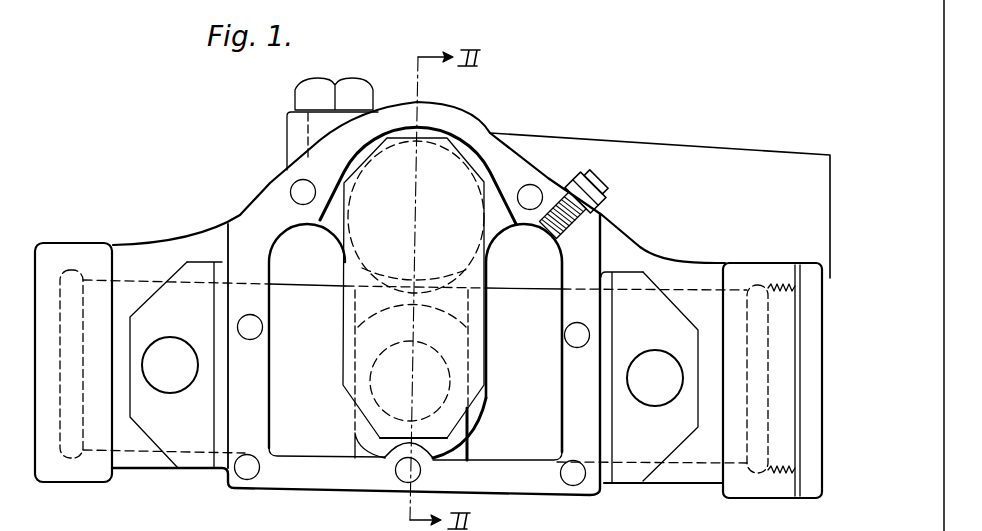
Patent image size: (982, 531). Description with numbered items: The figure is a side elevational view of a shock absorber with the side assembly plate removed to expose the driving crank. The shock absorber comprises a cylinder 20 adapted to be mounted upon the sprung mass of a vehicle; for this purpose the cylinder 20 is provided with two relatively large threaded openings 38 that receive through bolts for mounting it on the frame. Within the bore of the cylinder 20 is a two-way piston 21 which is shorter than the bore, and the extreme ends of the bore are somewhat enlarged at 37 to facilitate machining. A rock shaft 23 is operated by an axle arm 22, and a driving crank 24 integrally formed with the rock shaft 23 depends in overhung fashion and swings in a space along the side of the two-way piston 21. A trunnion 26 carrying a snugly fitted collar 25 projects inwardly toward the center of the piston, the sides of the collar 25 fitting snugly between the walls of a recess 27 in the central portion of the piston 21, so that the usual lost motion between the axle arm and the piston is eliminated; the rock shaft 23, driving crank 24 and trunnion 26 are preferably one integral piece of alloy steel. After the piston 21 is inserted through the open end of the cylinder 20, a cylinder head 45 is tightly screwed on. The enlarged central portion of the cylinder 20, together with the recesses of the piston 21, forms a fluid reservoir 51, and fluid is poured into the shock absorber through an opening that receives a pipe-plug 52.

The cylinder 20 is at (177, 240).
The two-way piston 21 is at (542, 338).
The axle arm 22 is at (748, 154).
The rock shaft 23 is at (360, 230).
The driving crank 24 is at (485, 385).
The collar 25 is at (470, 426).
The trunnion 26 is at (383, 388).
The recess 27 is at (470, 448).
The enlarged ends of cylinder bore 37 is at (70, 462).
The threaded openings 38 is at (177, 380).
The cylinder head 45 is at (812, 490).
The fluid reservoir 51 is at (546, 265).
The pipe-plug 52 is at (590, 202).